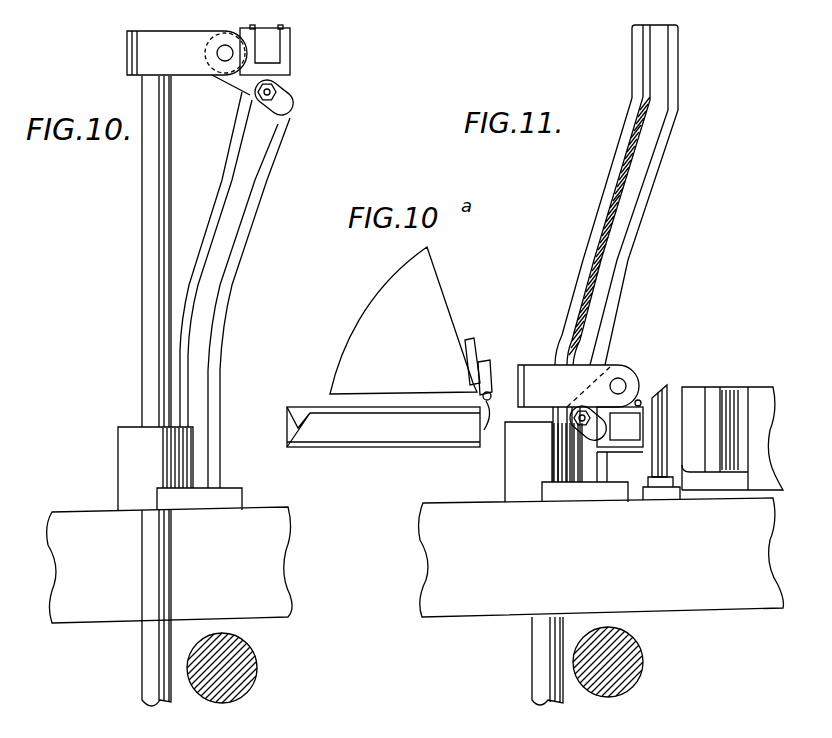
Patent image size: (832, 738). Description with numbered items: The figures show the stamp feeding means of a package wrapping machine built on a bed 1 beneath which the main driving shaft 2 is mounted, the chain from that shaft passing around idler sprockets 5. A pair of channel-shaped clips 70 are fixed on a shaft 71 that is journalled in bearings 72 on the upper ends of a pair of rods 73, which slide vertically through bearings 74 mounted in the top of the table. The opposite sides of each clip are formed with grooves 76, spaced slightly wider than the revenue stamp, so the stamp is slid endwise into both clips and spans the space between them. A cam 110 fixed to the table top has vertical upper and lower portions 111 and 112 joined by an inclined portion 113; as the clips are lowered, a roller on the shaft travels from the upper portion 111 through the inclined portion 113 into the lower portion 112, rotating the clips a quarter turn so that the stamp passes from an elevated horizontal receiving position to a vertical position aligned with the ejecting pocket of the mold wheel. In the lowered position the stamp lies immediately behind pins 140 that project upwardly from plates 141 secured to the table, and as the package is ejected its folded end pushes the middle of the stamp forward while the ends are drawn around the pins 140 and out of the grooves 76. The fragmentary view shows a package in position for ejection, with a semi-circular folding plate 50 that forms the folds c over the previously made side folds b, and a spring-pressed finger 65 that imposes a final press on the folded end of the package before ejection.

In FIG. 10, the bed 1 is at (273, 542).
In FIG. 11, the bed 1 is at (440, 535).
In FIG. 10, the main driving shaft 2 is at (242, 655).
In FIG. 11, the main driving shaft 2 is at (637, 652).
In FIG. 10, the idler sprockets 5 is at (268, 40).
In FIG. 10A, the folding plates 50 is at (422, 285).
In FIG. 10A, the finger 65 is at (480, 417).
In FIG. 10, the clips 70 is at (290, 70).
In FIG. 11, the clips 70 is at (621, 452).
In FIG. 10, the shaft 71 is at (217, 53).
In FIG. 10, the bearings 72 is at (197, 76).
In FIG. 11, the bearings 72 is at (533, 368).
In FIG. 10, the rods 73 is at (148, 243).
In FIG. 11, the rods 73 is at (538, 648).
In FIG. 10, the bearings 74 is at (127, 455).
In FIG. 11, the bearings 74 is at (507, 460).
In FIG. 10, the grooves 76 is at (252, 30).
In FIG. 11, the grooves 76 is at (639, 400).
In FIG. 10, the cam 110 is at (248, 260).
In FIG. 11, the cam 110 is at (667, 148).
In FIG. 11, the upper portion 111 is at (660, 65).
In FIG. 10, the lower portion 112 is at (202, 463).
In FIG. 11, the lower portion 112 is at (582, 355).
In FIG. 10, the inclined portion 113 is at (237, 213).
In FIG. 11, the inclined portion 113 is at (617, 220).
In FIG. 11, the pins 140 is at (667, 397).
In FIG. 11, the plates 141 is at (660, 493).
In FIG. 10A, the longitudinal side folds b is at (297, 417).
In FIG. 10A, the folds c is at (383, 427).